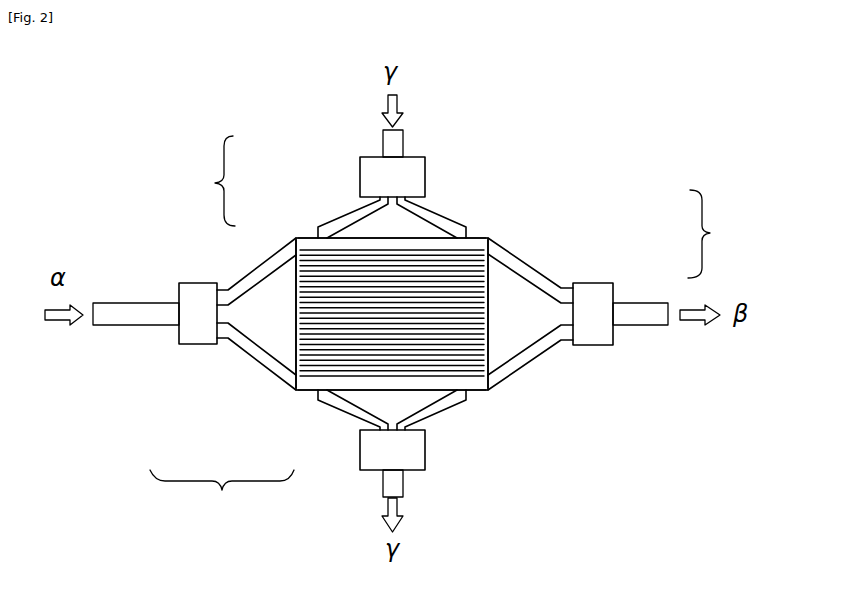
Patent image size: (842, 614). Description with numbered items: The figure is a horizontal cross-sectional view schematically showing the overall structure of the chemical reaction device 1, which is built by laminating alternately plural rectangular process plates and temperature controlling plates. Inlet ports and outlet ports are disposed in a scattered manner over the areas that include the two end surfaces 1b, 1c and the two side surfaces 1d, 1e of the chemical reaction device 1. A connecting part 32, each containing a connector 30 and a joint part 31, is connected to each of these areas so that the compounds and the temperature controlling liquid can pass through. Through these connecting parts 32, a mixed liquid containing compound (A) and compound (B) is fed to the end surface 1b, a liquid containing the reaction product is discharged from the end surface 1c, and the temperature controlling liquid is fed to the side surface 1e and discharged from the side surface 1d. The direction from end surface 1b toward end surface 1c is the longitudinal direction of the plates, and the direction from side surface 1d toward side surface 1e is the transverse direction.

The chemical reaction device 1 is at (506, 221).
The end surface of chemical reaction device 1b is at (283, 297).
The end surface of chemical reaction device 1c is at (512, 344).
The side surface of chemical reaction device 1d is at (476, 428).
The side surface of chemical reaction device 1e is at (454, 192).
The connector 30 is at (360, 179).
The joint part 31 is at (346, 215).
The connecting part 32 is at (447, 332).